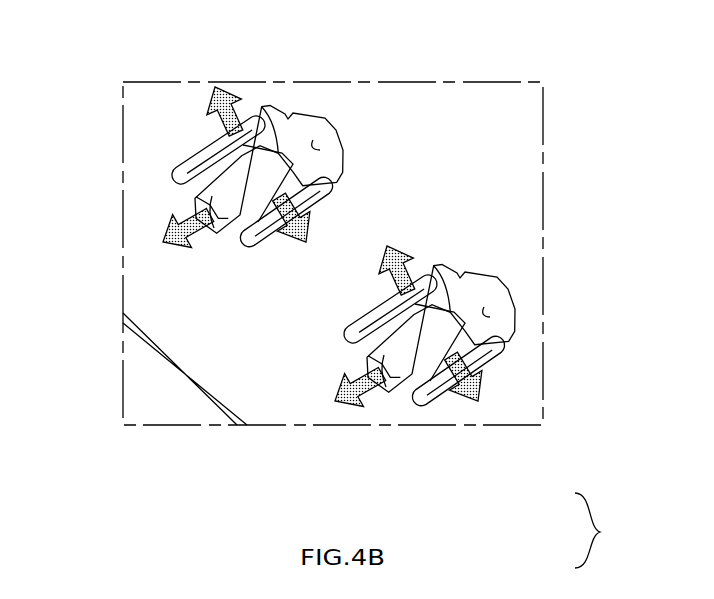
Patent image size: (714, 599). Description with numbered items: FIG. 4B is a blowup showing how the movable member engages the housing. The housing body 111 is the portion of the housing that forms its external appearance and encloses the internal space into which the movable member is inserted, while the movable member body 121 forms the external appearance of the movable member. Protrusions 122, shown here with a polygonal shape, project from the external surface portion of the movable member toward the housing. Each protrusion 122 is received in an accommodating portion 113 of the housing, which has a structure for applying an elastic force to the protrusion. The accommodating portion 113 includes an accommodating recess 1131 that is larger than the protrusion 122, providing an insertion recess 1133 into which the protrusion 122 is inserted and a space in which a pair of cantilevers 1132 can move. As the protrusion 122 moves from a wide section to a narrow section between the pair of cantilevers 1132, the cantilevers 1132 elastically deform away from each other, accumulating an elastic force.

The housing body 111 is at (537, 189).
The movable member body 121 is at (162, 414).
The protrusion 122 is at (265, 160).
The accommodating portion 113 is at (581, 534).
The accommodating recess 1131 is at (193, 150).
The cantilever 1132 is at (245, 116).
The insertion recess 1133 is at (333, 132).